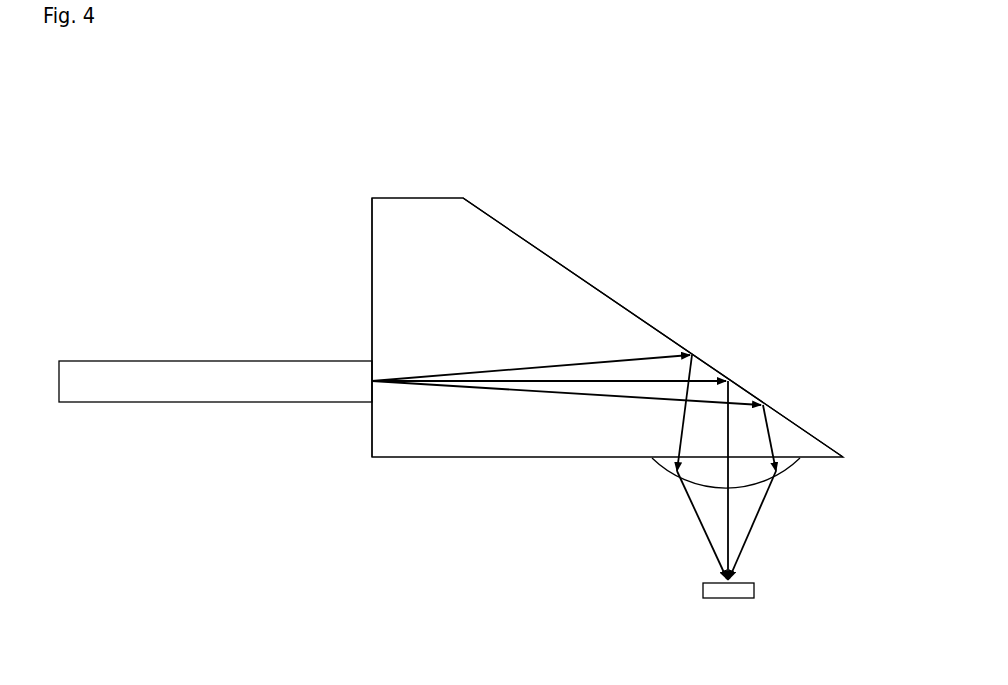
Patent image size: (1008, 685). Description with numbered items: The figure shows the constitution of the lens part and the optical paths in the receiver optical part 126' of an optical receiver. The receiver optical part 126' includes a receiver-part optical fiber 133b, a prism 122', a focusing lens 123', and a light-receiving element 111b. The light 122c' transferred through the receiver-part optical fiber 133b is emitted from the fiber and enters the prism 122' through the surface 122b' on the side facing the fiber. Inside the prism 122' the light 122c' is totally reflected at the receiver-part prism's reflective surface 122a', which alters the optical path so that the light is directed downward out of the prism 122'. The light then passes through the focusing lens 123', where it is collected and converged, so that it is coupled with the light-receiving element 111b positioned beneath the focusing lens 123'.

The receiver optical part 126' is at (797, 90).
The prism 122' is at (561, 327).
The receiver-part prism's reflective surface 122a' is at (653, 321).
The incident surface of prism 122b' is at (326, 327).
The light 122c' is at (574, 467).
The receiver-part optical fiber 133b is at (163, 352).
The focusing lens 123' is at (709, 508).
The light-receiving element 111b is at (766, 587).